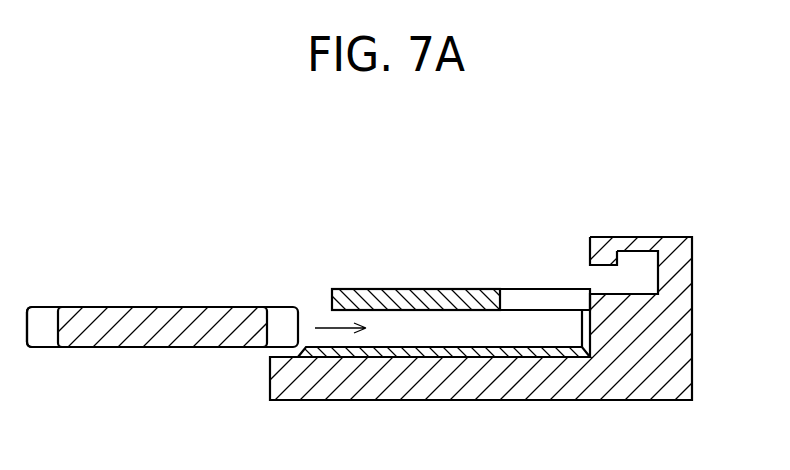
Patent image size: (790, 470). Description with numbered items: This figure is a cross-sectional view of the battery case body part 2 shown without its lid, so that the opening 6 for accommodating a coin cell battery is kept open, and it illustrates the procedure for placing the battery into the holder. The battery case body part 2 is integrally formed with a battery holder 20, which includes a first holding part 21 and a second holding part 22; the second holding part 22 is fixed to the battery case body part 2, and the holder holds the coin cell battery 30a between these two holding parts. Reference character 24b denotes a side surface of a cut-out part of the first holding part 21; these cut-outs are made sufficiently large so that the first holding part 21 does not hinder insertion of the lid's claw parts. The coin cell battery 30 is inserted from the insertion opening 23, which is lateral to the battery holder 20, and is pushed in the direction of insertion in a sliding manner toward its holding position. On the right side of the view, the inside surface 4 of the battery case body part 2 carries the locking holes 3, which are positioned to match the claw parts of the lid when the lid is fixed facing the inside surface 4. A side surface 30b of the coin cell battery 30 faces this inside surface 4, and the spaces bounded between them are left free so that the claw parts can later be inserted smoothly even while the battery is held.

The battery case body part 2 is at (667, 340).
The locking hole 3 is at (644, 287).
The inside surface 4 is at (590, 250).
The opening 6 is at (343, 263).
The battery holder 20 is at (465, 222).
The first holding part 21 is at (379, 289).
The second holding part 22 is at (445, 347).
The insertion opening 23 is at (323, 318).
The side surface of cut-out part 24b is at (531, 298).
The coin cell battery 30 is at (165, 320).
The coin cell battery 30a is at (165, 333).
The side surface of coin cell battery 30b is at (43, 332).